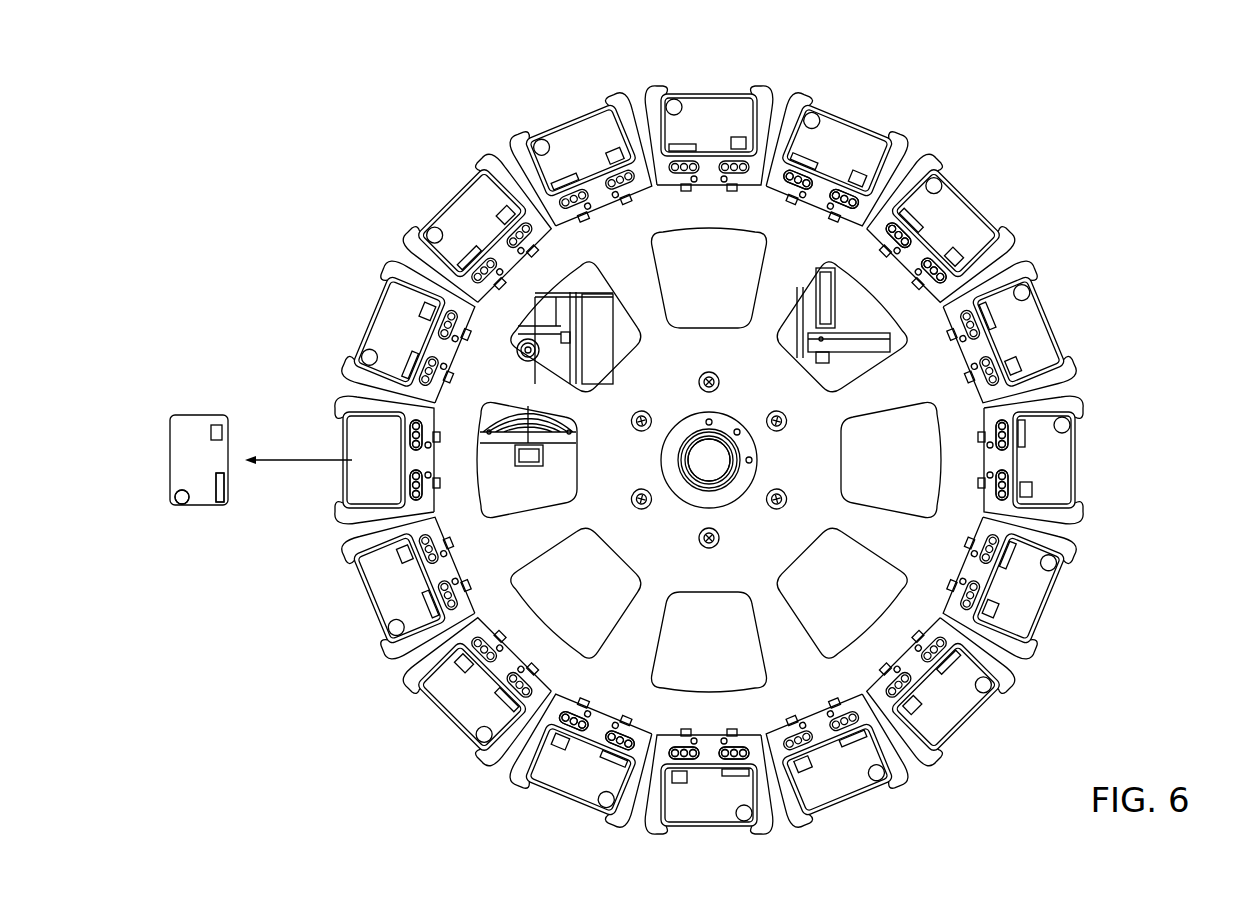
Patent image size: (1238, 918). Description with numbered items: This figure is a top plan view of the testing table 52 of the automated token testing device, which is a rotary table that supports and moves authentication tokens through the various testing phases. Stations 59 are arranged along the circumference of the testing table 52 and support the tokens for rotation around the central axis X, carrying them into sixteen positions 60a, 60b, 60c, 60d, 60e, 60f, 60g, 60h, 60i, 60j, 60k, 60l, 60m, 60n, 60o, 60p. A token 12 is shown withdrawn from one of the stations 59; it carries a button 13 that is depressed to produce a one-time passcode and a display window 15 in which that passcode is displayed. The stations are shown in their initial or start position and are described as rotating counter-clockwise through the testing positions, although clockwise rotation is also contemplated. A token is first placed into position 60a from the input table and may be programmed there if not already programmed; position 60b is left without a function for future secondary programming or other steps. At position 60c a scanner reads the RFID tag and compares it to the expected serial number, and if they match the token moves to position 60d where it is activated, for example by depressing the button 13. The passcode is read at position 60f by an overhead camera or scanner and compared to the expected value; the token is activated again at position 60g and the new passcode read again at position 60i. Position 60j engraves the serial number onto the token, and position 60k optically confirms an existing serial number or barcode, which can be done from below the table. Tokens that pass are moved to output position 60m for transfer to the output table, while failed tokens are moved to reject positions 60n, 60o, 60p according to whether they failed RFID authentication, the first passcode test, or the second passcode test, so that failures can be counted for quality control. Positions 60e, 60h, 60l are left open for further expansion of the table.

The testing table 52 is at (1118, 143).
The token 12 is at (190, 400).
The button 13 is at (176, 502).
The display window 15 is at (226, 490).
The stations 59 is at (880, 233).
The position 60a is at (695, 815).
The position 60b is at (838, 790).
The position 60c is at (955, 722).
The position 60d is at (1045, 590).
The position 60e is at (1080, 462).
The position 60f is at (1035, 298).
The position 60g is at (965, 208).
The position 60h is at (827, 122).
The position 60i is at (703, 93).
The position 60j is at (572, 104).
The position 60k is at (436, 215).
The position 60l is at (383, 320).
The output position 60m is at (347, 480).
The reject position 60n is at (395, 600).
The reject position 60o is at (462, 705).
The reject position 60p is at (558, 795).
The central axis X is at (709, 459).